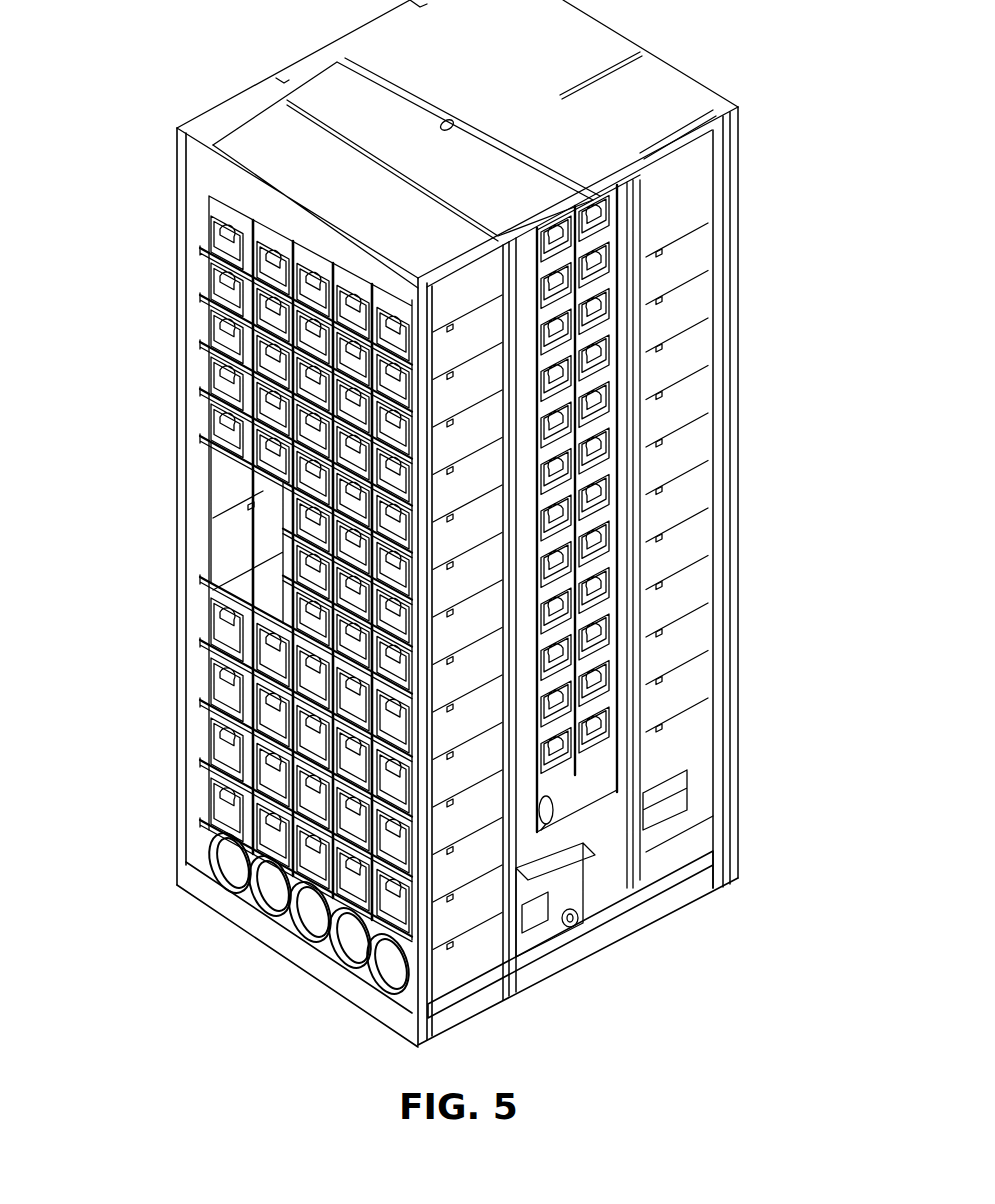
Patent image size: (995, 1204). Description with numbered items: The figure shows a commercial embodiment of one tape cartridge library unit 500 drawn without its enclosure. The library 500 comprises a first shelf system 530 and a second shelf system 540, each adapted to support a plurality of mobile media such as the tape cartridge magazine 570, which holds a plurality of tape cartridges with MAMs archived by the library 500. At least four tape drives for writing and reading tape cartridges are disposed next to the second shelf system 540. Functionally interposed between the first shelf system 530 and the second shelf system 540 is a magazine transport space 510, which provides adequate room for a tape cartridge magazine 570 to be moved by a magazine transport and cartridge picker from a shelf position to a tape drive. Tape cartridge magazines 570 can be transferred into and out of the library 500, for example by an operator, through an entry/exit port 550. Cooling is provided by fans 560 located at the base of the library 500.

The T-950 library unit 500 is at (231, 53).
The magazine transport space 510 is at (595, 880).
The first shelf system 530 is at (158, 663).
The second shelf system 540 is at (750, 516).
The entry/exit port 550 is at (244, 548).
The fans 560 is at (230, 919).
The tape cartridge magazine 570 is at (228, 328).